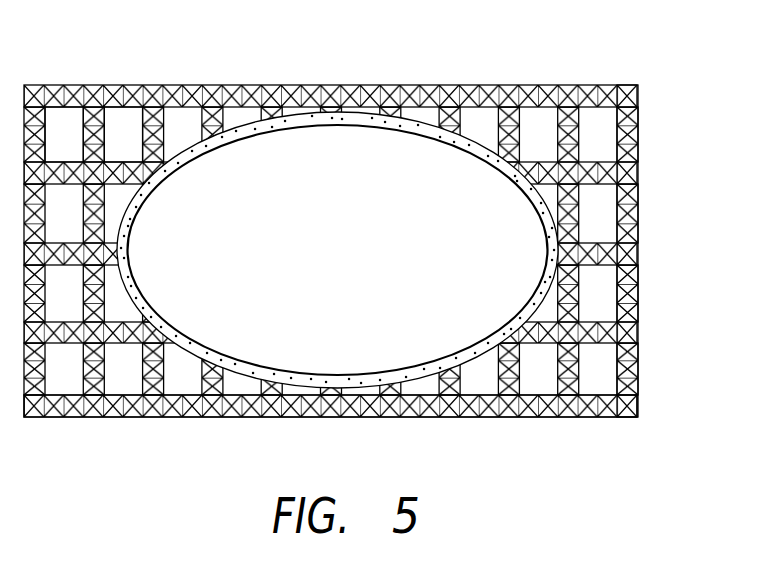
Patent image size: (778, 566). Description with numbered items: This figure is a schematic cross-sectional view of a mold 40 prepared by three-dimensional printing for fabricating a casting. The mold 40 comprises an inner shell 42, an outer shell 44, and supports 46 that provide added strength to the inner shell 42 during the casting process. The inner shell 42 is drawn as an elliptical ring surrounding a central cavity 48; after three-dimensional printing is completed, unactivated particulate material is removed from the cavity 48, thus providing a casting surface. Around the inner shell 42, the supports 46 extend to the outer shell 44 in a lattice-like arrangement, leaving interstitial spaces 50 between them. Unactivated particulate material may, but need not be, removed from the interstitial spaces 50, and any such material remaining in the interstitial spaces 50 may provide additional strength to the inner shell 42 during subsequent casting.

The mold 40 is at (569, 79).
The inner shell 42 is at (532, 233).
The outer shell 44 is at (611, 433).
The supports 46 is at (638, 100).
The cavity 48 is at (347, 266).
The interstitial spaces 50 is at (58, 123).